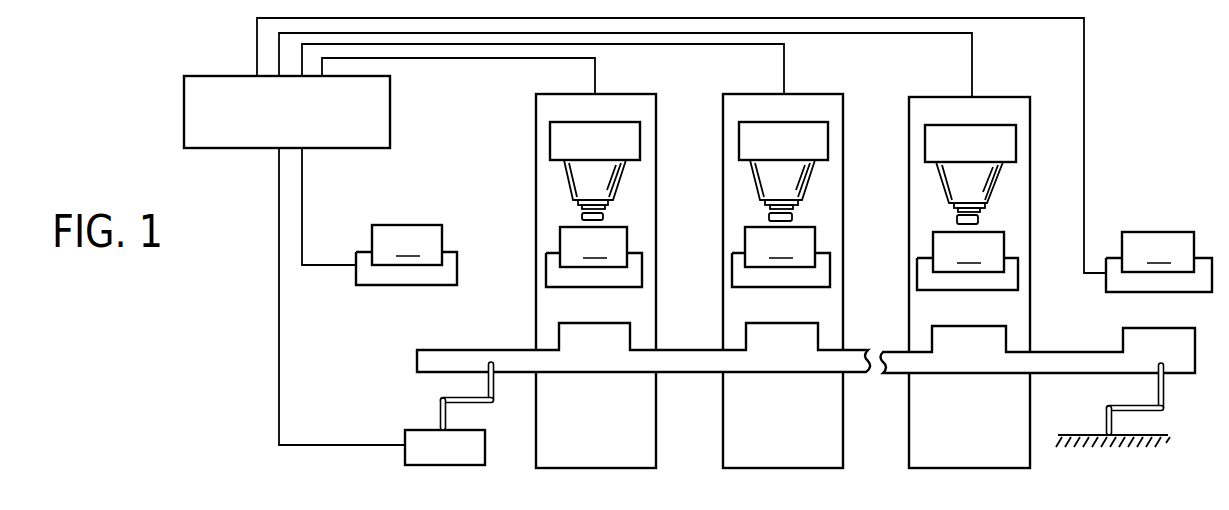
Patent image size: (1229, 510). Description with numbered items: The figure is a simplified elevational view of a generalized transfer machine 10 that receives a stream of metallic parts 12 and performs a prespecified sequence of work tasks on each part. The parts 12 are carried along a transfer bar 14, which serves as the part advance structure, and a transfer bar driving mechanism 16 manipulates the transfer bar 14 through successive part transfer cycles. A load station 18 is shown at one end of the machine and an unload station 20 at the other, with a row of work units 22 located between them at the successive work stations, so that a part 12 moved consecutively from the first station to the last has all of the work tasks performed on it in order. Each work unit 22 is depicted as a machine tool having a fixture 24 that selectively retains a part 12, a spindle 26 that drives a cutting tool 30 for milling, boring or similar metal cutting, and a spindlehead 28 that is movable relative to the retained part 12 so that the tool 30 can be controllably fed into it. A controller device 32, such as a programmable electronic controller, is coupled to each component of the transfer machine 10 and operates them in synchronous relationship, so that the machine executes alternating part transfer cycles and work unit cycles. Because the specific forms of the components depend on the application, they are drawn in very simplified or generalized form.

The transfer machine 10 is at (262, 409).
The metallic part 12 is at (783, 248).
The transfer bar 14 is at (686, 362).
The transfer bar driving mechanism 16 is at (458, 393).
The load station 18 is at (390, 287).
The unload station 20 is at (1208, 258).
The work unit 22 is at (536, 137).
The fixture 24 is at (568, 283).
The spindle 26 is at (585, 208).
The spindlehead 28 is at (570, 178).
The cutting tool 30 is at (604, 216).
The controller device 32 is at (184, 110).